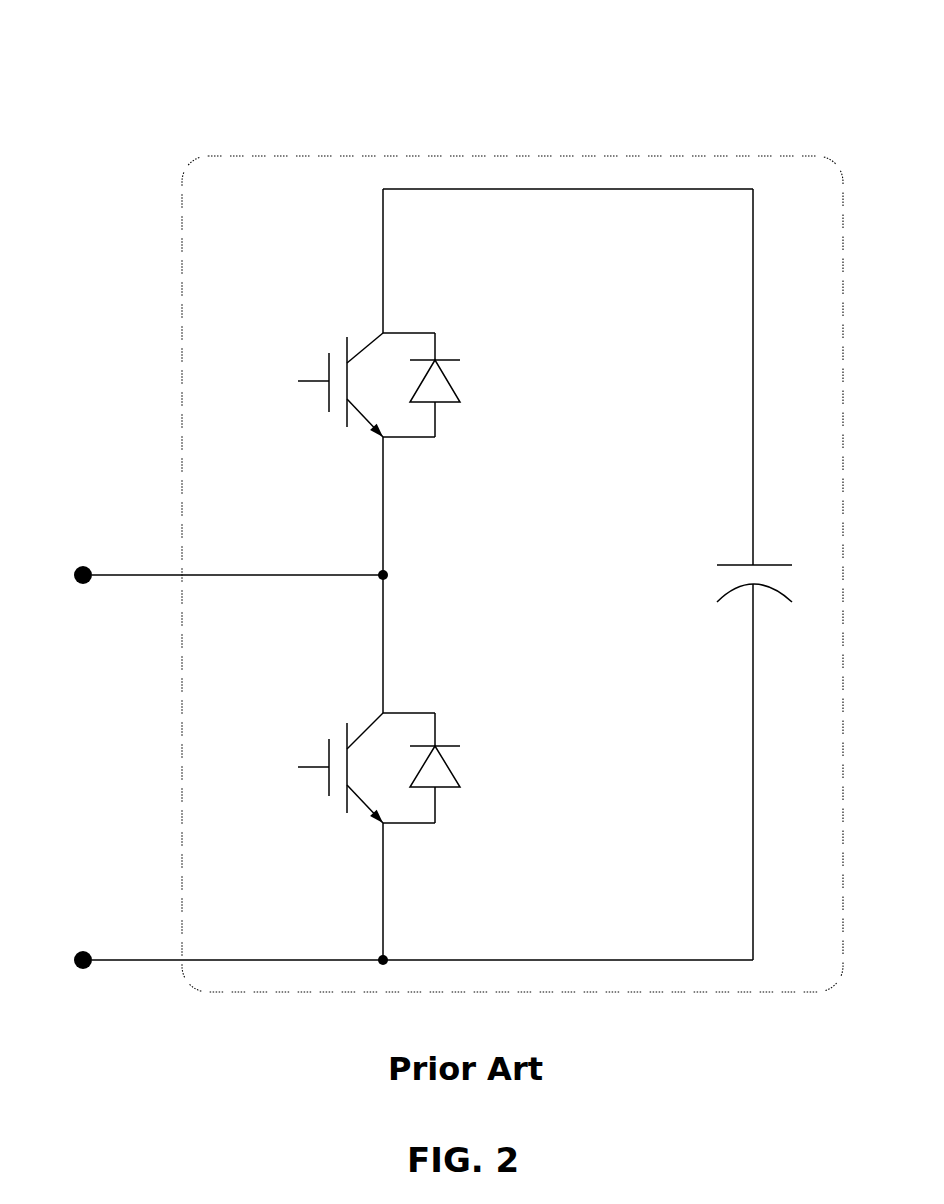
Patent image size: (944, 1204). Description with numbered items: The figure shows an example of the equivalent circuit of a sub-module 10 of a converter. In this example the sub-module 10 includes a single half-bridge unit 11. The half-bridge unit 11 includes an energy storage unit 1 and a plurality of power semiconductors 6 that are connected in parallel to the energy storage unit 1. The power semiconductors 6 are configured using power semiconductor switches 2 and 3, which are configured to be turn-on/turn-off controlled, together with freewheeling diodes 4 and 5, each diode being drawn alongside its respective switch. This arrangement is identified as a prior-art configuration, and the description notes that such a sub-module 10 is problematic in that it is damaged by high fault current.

The energy storage unit 1 is at (757, 563).
The power semiconductor switch 2 is at (329, 378).
The power semiconductor switch 3 is at (329, 766).
The freewheeling diode 4 is at (445, 368).
The freewheeling diode 5 is at (445, 756).
The power semiconductors 6 is at (430, 460).
The sub-module 10 is at (478, 110).
The half-bridge unit 11 is at (536, 155).